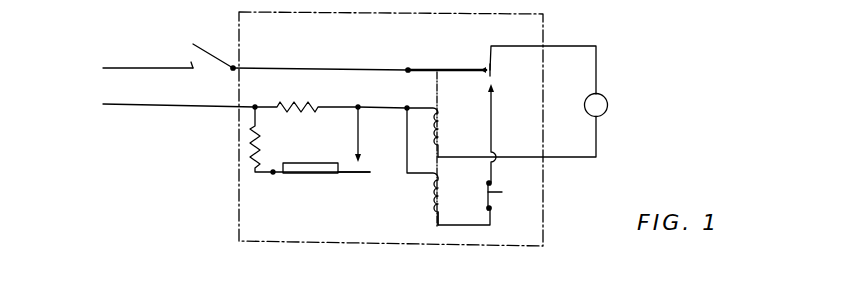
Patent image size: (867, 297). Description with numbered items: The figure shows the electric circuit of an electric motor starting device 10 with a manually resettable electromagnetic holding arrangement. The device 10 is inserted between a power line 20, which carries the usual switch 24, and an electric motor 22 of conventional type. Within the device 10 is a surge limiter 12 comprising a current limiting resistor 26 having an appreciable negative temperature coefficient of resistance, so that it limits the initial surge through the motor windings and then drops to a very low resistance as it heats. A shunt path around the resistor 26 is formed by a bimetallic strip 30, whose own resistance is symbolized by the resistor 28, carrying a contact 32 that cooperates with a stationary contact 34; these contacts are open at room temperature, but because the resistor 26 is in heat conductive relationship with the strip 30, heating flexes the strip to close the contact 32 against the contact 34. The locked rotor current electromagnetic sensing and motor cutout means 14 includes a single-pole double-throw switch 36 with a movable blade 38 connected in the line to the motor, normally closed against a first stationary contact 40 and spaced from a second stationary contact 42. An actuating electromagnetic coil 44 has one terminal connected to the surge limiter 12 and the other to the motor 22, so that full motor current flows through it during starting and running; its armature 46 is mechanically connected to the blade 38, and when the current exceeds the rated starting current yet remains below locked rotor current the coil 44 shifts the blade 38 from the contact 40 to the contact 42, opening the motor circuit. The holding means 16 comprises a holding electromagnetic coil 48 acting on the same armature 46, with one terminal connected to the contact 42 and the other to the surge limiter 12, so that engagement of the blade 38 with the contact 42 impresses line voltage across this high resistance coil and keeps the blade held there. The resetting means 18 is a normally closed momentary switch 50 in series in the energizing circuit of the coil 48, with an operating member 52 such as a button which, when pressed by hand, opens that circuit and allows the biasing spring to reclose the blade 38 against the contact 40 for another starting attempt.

The starting device 10 is at (550, 32).
The surge limiter 12 is at (273, 184).
The locked rotor current electromagnetic sensing and motor cutout means 14 is at (420, 147).
The holding means 16 is at (428, 212).
The resetting means 18 is at (516, 190).
The power line 20 is at (130, 80).
The electric motor 22 is at (612, 104).
The switch 24 is at (221, 35).
The current limiting resistor 26 is at (304, 103).
The resistor 28 is at (240, 144).
The bimetallic strip 30 is at (315, 174).
The contact 32 is at (351, 174).
The stationary contact 34 is at (356, 156).
The single-pole double-throw switch 36 is at (478, 65).
The movable blade 38 is at (430, 67).
The first stationary contact 40 is at (496, 67).
The second stationary contact 42 is at (496, 90).
The actuating electromagnetic coil 44 is at (441, 128).
The armature 46 is at (436, 104).
The holding electromagnetic coil 48 is at (444, 201).
The normally closed momentary switch 50 is at (487, 195).
The operating member 52 is at (496, 197).